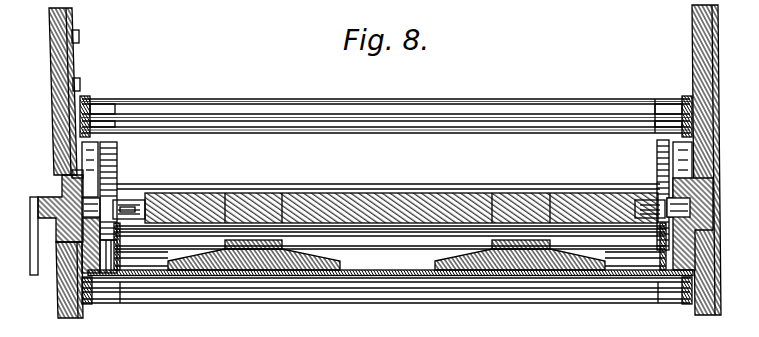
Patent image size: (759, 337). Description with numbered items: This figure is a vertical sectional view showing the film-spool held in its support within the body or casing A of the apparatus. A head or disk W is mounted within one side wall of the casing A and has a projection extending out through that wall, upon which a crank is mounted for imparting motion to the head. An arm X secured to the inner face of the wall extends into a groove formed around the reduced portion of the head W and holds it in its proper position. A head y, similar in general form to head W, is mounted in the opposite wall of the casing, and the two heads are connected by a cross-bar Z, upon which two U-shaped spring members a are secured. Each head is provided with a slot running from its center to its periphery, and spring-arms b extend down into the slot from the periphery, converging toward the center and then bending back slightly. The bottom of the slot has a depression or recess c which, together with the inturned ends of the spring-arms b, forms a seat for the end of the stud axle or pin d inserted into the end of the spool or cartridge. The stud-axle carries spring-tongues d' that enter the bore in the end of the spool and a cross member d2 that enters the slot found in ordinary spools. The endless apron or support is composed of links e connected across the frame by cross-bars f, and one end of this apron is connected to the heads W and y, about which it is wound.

The body or casing A is at (752, 61).
The arm X is at (72, 58).
The links e is at (84, 99).
The cross-bars f is at (167, 130).
The spring-arms b is at (82, 155).
The head or disk W is at (55, 184).
The stud axle or pin d is at (393, 213).
The cross member d2 is at (117, 198).
The spring-tongues d' is at (405, 200).
The depression or recess c is at (63, 232).
The U-shaped spring members a is at (287, 243).
The head y is at (693, 253).
The cross-bar Z is at (425, 275).